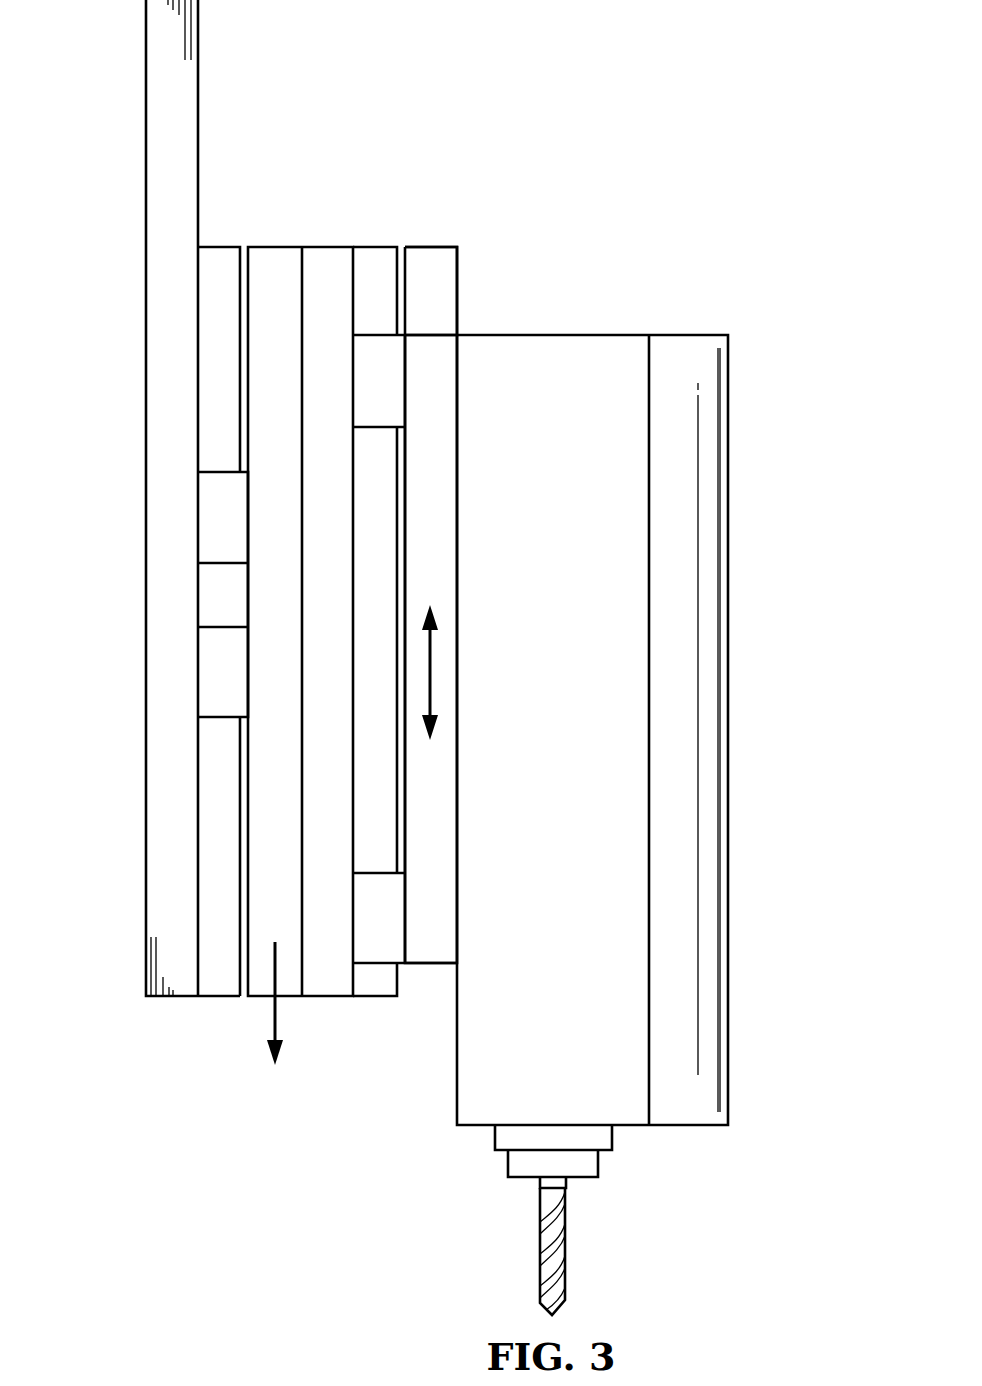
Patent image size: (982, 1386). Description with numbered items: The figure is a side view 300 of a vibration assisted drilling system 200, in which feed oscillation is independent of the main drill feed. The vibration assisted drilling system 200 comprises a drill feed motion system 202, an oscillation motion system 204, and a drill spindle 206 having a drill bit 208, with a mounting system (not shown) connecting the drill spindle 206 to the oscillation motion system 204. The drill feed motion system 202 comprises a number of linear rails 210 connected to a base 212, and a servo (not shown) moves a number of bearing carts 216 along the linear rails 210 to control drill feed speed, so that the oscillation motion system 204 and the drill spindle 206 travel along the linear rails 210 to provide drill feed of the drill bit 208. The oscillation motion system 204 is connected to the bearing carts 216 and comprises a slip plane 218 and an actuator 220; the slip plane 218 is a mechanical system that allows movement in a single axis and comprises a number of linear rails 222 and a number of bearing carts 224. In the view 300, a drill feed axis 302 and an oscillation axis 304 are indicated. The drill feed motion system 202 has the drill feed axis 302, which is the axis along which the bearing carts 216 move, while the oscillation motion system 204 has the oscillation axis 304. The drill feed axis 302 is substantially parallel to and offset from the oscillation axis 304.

The vibration assisted drilling system 200 is at (548, 124).
The drill feed motion system 202 is at (252, 152).
The oscillation motion system 204 is at (418, 144).
The drill spindle 206 is at (595, 345).
The drill bit 208 is at (567, 1268).
The number of linear rails 210 is at (205, 440).
The base 212 is at (152, 136).
The number of bearing carts 216 is at (272, 255).
The slip plane 218 is at (406, 234).
The actuator 220 is at (448, 290).
The number of linear rails 222 is at (372, 255).
The number of bearing carts 224 is at (447, 520).
The view 300 is at (667, 80).
The drill feed axis 302 is at (273, 1020).
The oscillation axis 304 is at (432, 672).